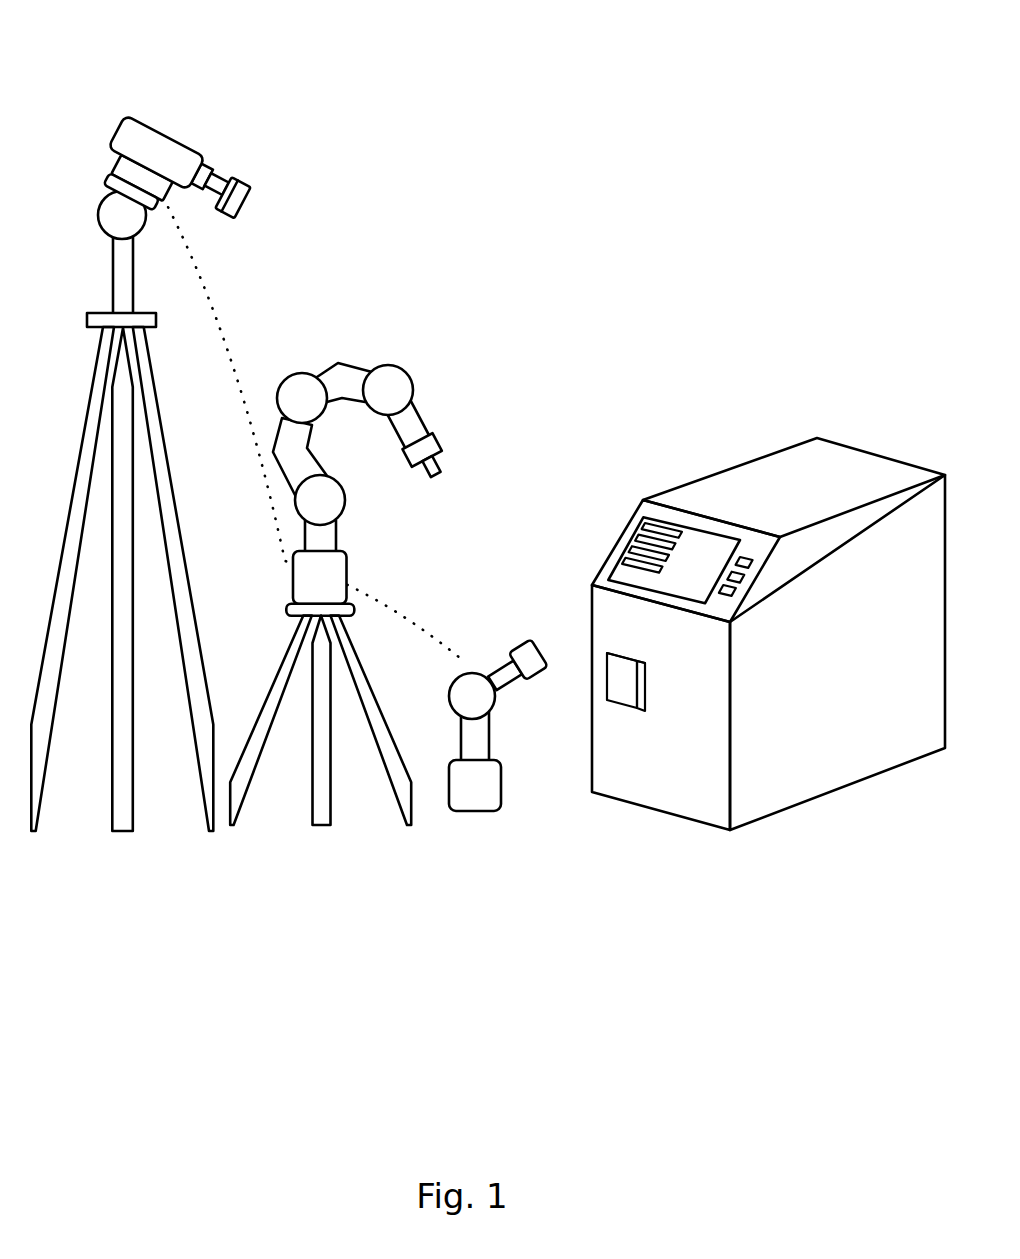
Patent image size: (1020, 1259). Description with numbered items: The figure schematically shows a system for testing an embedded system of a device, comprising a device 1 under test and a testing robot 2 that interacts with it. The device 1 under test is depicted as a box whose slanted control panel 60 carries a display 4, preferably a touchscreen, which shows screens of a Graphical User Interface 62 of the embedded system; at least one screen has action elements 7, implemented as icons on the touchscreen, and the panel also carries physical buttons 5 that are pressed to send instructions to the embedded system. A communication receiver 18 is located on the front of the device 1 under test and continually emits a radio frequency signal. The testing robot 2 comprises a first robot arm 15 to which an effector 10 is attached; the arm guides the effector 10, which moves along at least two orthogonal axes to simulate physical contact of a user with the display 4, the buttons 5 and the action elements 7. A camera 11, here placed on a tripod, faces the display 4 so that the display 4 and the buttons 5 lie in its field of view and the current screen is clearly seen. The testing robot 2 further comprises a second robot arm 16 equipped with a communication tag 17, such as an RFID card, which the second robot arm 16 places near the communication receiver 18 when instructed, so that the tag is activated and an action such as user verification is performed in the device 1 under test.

The device under test 1 is at (757, 542).
The testing robot 2 is at (374, 505).
The display 4 is at (688, 527).
The button 5 is at (733, 596).
The action element 7 is at (648, 543).
The effector 10 is at (443, 447).
The camera 11 is at (168, 133).
The first robot arm 15 is at (423, 415).
The second robot arm 16 is at (506, 664).
The communication tag 17 is at (526, 642).
The communication receiver 18 is at (630, 700).
The control panel 60 is at (643, 500).
The Graphical User Interface 62 is at (718, 550).